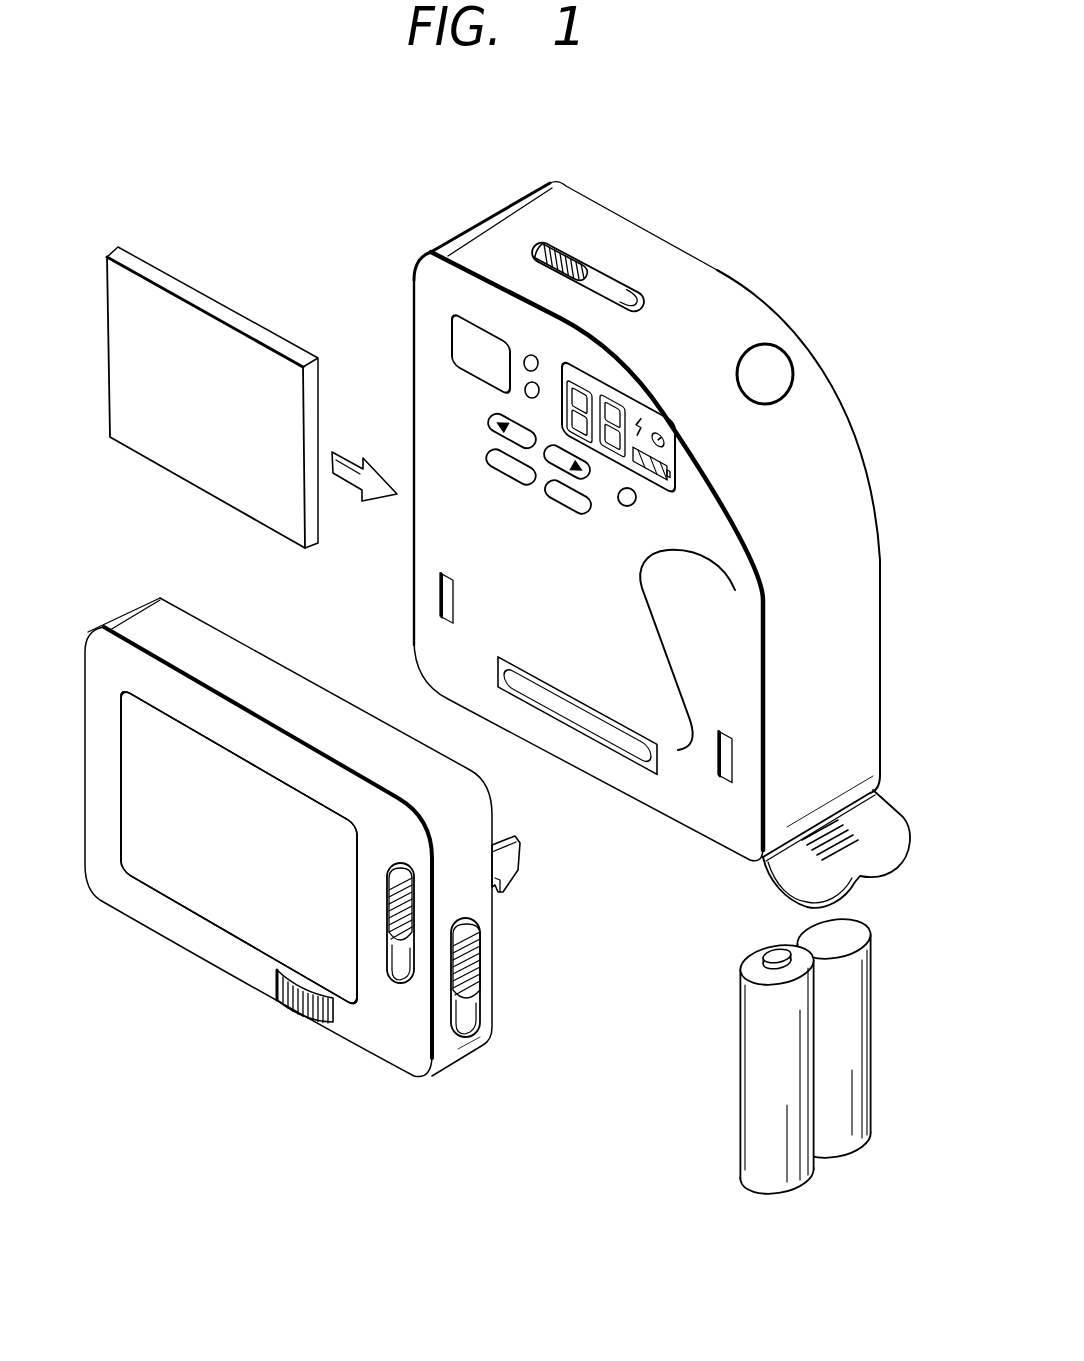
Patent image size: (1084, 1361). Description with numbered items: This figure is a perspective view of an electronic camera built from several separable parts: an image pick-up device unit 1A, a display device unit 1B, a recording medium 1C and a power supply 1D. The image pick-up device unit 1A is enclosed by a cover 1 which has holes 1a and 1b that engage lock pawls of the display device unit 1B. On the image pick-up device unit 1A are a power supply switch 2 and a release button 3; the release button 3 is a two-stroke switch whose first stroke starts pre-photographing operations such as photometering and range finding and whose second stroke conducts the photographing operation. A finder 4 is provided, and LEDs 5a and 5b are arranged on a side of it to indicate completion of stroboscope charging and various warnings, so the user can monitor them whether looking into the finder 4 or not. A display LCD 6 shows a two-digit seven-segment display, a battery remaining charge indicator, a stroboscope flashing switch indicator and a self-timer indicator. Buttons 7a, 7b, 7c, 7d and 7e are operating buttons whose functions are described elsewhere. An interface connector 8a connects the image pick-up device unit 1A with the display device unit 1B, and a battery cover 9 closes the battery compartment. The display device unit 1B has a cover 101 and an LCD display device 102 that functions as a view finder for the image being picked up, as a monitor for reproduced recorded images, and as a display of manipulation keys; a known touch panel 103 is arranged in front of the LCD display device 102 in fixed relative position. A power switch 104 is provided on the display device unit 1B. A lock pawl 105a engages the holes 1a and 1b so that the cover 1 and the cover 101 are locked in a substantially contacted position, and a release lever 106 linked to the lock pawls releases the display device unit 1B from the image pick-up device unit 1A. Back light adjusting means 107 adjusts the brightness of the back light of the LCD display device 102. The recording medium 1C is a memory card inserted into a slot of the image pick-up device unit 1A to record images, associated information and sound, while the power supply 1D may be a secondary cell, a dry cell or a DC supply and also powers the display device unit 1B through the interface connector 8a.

The cover 1 is at (846, 486).
The image pick-up device unit 1A is at (688, 192).
The display device unit 1B is at (365, 1080).
The recording medium 1C is at (218, 276).
The power supply 1D is at (816, 1188).
The hole 1a is at (718, 758).
The hole 1b is at (440, 601).
The power supply switch 2 is at (592, 252).
The release button 3 is at (772, 369).
The finder 4 is at (463, 336).
The LED 5a is at (537, 359).
The LED 5b is at (529, 382).
The display LCD 6 is at (670, 448).
The button 7a is at (487, 423).
The button 7b is at (593, 470).
The button 7c is at (637, 500).
The button 7d is at (487, 468).
The button 7e is at (547, 503).
The interface connector 8a is at (578, 719).
The battery cover 9 is at (890, 836).
The cover 101 is at (115, 900).
The LCD display device 102 is at (203, 878).
The touch panel 103 is at (203, 878).
The power switch 104 is at (392, 906).
The lock pawl 105a is at (518, 868).
The release lever 106 is at (480, 956).
The back light adjusting means 107 is at (290, 1011).